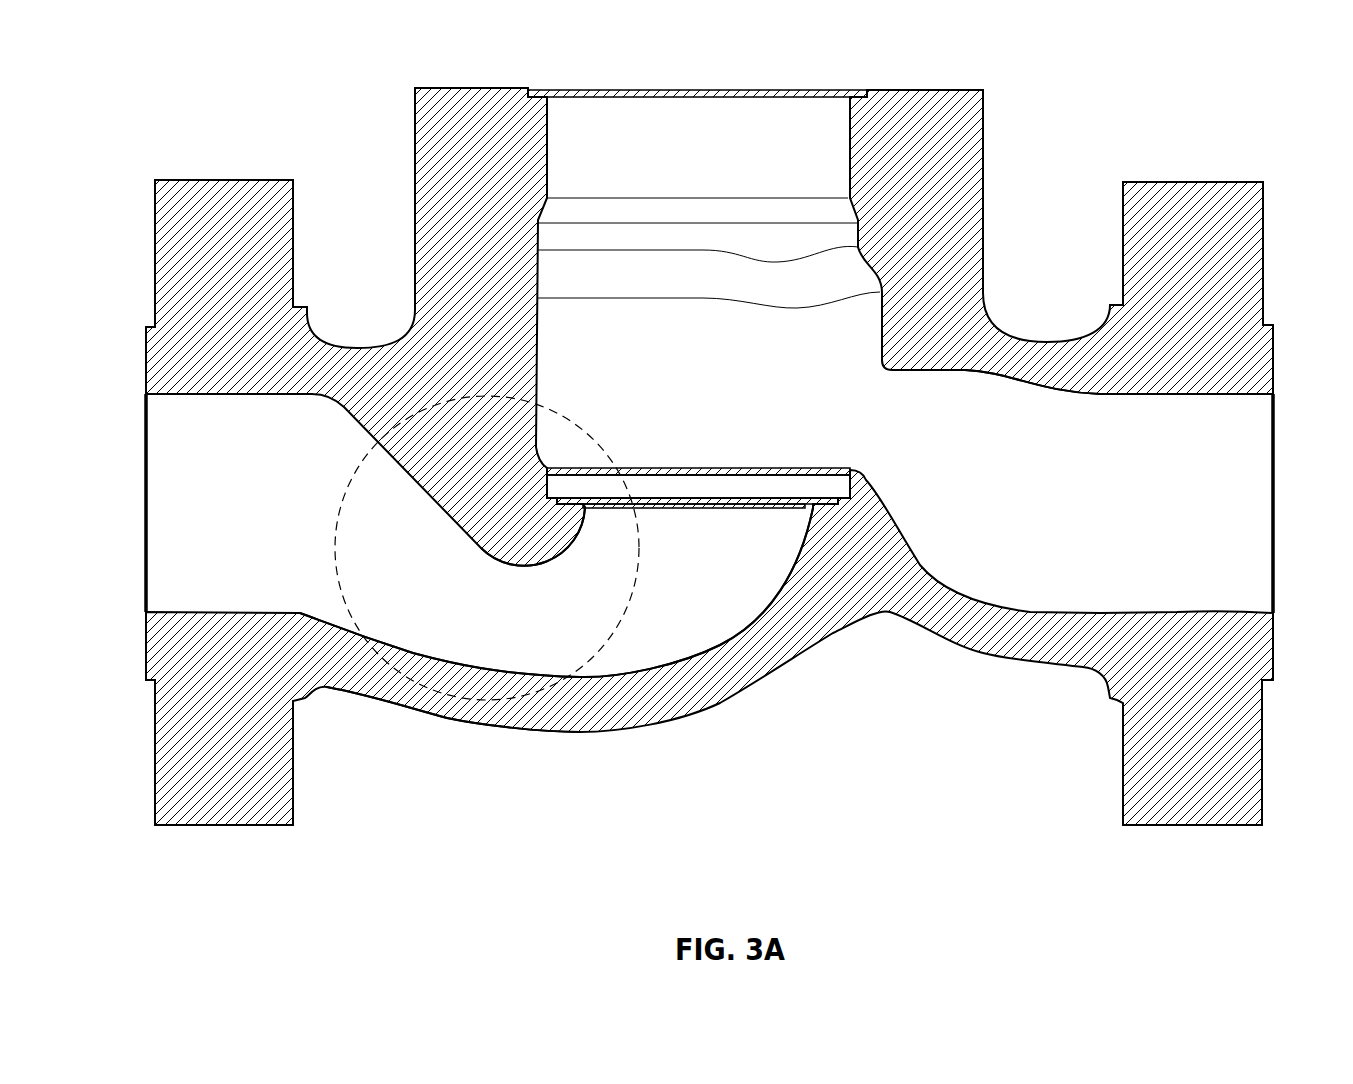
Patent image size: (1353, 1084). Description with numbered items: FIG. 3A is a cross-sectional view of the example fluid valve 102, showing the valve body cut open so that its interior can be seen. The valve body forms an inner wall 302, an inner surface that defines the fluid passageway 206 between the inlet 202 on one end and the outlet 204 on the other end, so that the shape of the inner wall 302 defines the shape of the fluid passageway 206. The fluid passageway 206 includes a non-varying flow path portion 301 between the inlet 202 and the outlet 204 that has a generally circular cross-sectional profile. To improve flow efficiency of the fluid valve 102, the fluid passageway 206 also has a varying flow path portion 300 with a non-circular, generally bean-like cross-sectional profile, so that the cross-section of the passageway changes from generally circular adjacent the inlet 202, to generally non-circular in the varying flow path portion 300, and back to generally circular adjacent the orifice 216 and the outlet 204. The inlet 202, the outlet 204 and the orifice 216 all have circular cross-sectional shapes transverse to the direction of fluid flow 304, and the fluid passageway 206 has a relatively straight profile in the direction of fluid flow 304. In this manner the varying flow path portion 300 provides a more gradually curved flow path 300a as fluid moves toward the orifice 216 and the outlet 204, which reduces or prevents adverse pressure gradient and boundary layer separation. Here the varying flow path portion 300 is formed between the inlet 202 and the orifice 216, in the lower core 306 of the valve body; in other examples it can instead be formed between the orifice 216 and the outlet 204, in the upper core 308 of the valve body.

The fluid valve 102 is at (172, 74).
The outlet 204 is at (432, 138).
The orifice 216 is at (650, 378).
The upper core 308 is at (1034, 369).
The non-varying flow path portion 301 is at (1240, 424).
The inlet 202 is at (146, 500).
The inner wall 302 is at (1127, 562).
The direction of fluid flow 304 is at (348, 556).
The fluid passageway 206 is at (731, 587).
The varying flow path portion 300 is at (387, 665).
The lower core 306 is at (424, 676).
The gradually curved flow path 300a is at (518, 545).